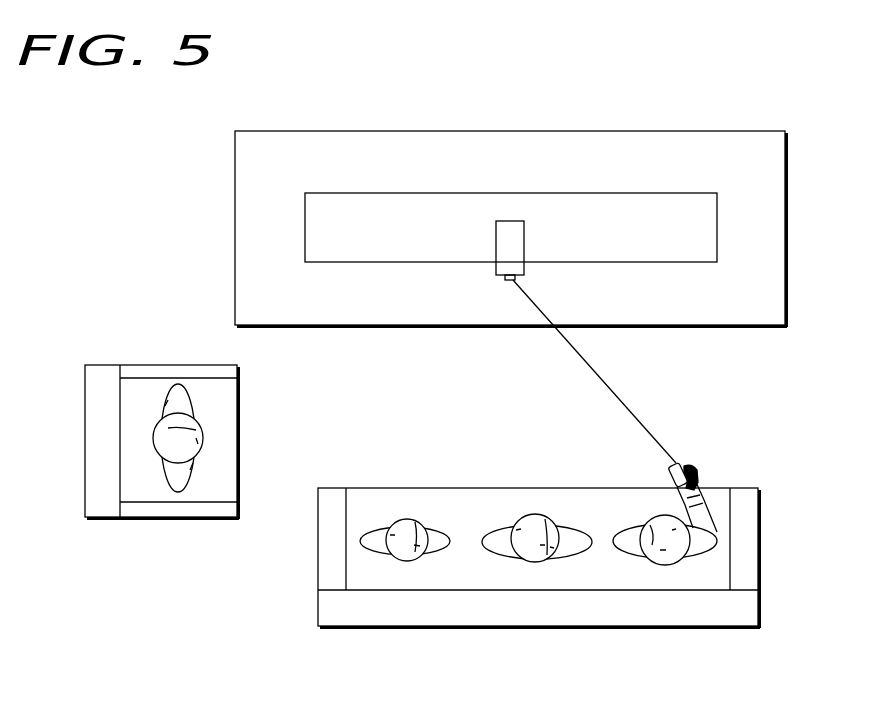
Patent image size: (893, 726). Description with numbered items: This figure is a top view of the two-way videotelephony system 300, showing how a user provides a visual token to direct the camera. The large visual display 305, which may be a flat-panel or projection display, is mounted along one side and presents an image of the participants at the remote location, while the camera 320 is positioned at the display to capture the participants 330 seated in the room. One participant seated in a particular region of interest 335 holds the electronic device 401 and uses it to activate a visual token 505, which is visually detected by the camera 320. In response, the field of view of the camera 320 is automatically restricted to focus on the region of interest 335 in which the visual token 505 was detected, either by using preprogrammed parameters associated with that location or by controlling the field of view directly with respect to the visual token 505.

The system 300 is at (128, 138).
The visual display 305 is at (305, 228).
The camera 320 is at (507, 221).
The participants 330 is at (228, 562).
The region of interest 335 is at (722, 455).
The electronic device 401 is at (670, 477).
The visual token 505 is at (620, 401).